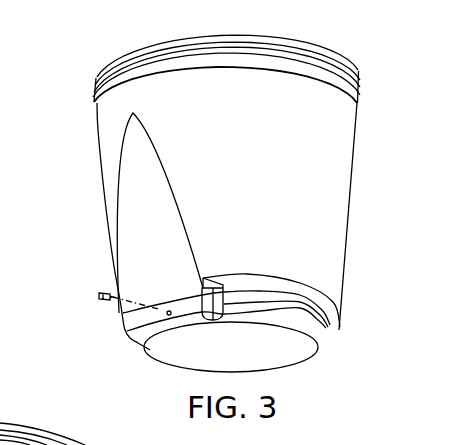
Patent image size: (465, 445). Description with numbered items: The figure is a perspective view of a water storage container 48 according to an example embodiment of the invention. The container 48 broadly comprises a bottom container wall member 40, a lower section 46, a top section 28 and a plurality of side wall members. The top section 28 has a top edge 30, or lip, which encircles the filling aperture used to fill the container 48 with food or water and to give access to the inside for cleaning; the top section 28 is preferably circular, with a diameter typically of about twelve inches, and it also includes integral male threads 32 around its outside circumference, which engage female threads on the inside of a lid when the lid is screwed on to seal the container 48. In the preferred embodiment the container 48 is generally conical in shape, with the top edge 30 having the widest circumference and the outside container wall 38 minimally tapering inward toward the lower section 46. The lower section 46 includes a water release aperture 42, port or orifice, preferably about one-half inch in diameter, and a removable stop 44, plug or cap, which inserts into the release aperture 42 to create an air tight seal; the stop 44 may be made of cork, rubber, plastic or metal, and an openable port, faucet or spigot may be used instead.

The top edge 30 is at (340, 57).
The top section 28 is at (360, 75).
The male threads 32 is at (363, 90).
The outside container wall 38 is at (310, 138).
The container 48 is at (259, 203).
The removable stop 44 is at (98, 293).
The water release aperture 42 is at (166, 313).
The lower section 46 is at (318, 328).
The bottom container wall member 40 is at (245, 345).